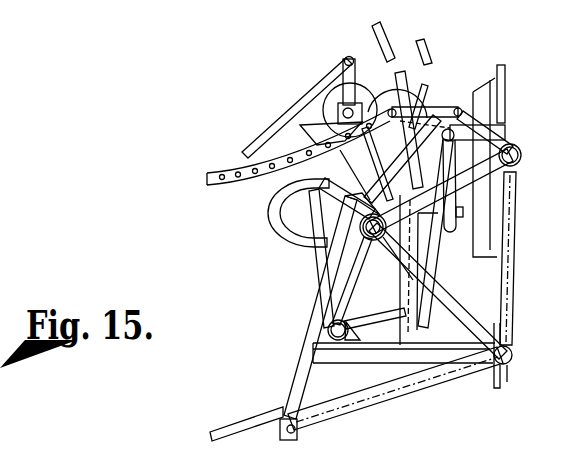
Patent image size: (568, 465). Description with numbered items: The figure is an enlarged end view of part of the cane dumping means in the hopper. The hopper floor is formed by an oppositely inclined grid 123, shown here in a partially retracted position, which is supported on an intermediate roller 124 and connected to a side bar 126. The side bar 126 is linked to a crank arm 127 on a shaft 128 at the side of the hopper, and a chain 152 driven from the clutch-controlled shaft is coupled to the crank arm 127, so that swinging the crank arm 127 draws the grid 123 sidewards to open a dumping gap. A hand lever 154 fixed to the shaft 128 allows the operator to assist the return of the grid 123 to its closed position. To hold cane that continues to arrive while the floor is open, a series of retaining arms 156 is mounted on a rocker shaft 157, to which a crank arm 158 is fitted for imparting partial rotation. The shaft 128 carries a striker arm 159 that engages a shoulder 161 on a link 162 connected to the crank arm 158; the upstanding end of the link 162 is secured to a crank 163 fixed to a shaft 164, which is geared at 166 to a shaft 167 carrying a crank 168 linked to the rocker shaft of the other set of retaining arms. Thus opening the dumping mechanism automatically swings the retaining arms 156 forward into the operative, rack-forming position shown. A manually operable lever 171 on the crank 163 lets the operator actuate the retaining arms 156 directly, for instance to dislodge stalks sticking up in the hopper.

The inclined grid 123 is at (245, 399).
The intermediate roller 124 is at (300, 430).
The side bar 126 is at (422, 372).
The crank arm 127 is at (434, 322).
The shaft 128 is at (360, 226).
The chain 152 is at (227, 172).
The hand lever 154 is at (430, 52).
The retaining arm 156 is at (268, 201).
The rocker shaft 157 is at (328, 331).
The crank arm 158 is at (382, 322).
The striker arm 159 is at (392, 256).
The shoulder 161 is at (437, 243).
The link 162 is at (462, 116).
The crank 163 is at (447, 108).
The shaft 164 is at (398, 93).
The gearing 166 is at (328, 86).
The shaft 167 is at (318, 110).
The crank 168 is at (341, 60).
The manually operable lever 171 is at (393, 46).